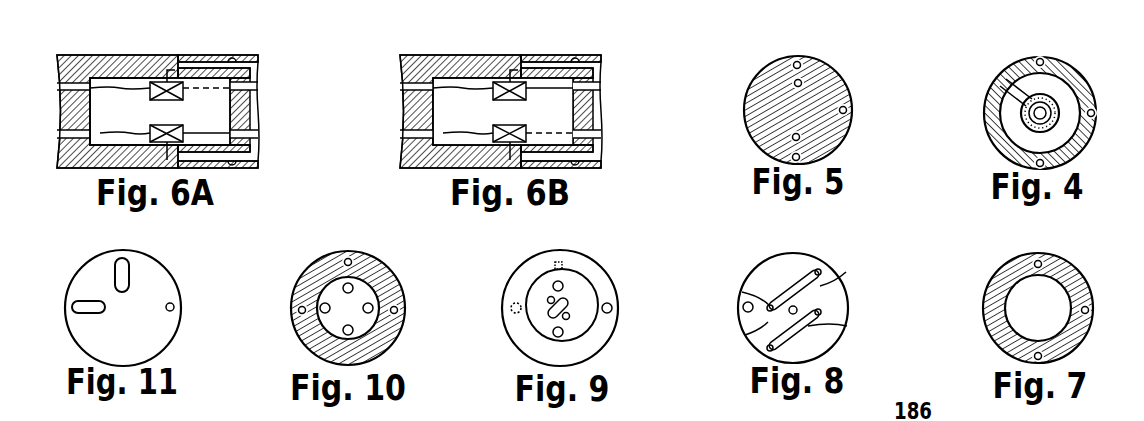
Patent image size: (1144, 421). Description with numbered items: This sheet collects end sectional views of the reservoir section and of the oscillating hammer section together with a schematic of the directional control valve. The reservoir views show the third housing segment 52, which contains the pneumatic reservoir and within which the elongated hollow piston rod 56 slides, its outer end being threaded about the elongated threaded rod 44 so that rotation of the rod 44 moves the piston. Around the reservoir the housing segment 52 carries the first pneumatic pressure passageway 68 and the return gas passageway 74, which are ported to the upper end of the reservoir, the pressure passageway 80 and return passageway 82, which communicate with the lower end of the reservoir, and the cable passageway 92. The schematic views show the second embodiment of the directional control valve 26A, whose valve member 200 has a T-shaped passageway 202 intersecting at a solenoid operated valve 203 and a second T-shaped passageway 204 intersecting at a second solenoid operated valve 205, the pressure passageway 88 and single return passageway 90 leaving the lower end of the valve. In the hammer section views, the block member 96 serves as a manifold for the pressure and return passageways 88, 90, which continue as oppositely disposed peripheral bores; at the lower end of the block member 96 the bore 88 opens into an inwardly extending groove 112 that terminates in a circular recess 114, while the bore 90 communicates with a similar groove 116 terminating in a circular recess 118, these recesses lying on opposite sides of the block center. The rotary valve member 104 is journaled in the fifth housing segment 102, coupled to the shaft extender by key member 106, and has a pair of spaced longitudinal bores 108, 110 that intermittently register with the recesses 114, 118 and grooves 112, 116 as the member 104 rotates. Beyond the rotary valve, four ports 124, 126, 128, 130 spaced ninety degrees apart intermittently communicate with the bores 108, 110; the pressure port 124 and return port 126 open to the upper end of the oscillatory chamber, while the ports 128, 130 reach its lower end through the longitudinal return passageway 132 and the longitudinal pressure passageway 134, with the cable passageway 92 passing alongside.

In FIG. 6A, the directional control valve (second embodiment) 26A is at (158, 62).
In FIG. 6B, the directional control valve (second embodiment) 26A is at (488, 62).
In FIG. 4, the threaded rod 44 is at (1003, 80).
In FIG. 4, the third housing segment 52 is at (1069, 66).
In FIG. 4, the piston rod 56 is at (1001, 92).
In FIG. 6A, the first pneumatic pressure passageway 68 is at (238, 55).
In FIG. 6B, the first pneumatic pressure passageway 68 is at (577, 55).
In FIG. 5, the first pneumatic pressure passageway 68 is at (803, 64).
In FIG. 4, the first pneumatic pressure passageway 68 is at (1039, 59).
In FIG. 6A, the return gas passageway 74 is at (252, 164).
In FIG. 6B, the return gas passageway 74 is at (600, 166).
In FIG. 5, the return gas passageway 74 is at (790, 157).
In FIG. 4, the return gas passageway 74 is at (1034, 163).
In FIG. 6A, the pressure passageway 80 is at (250, 86).
In FIG. 6B, the pressure passageway 80 is at (596, 90).
In FIG. 5, the pressure passageway 80 is at (792, 84).
In FIG. 6A, the return passageway 82 is at (252, 134).
In FIG. 6B, the return passageway 82 is at (598, 136).
In FIG. 5, the return passageway 82 is at (790, 137).
In FIG. 6A, the pressure passageway 88 is at (62, 85).
In FIG. 6B, the pressure passageway 88 is at (430, 88).
In FIG. 8, the pressure passageway 88 is at (822, 276).
In FIG. 7, the pressure passageway 88 is at (1032, 264).
In FIG. 6A, the return passageway 90 is at (64, 134).
In FIG. 6B, the return passageway 90 is at (400, 134).
In FIG. 8, the return passageway 90 is at (767, 351).
In FIG. 7, the return passageway 90 is at (1032, 356).
In FIG. 5, the cable passageway 92 is at (848, 110).
In FIG. 4, the cable passageway 92 is at (1096, 113).
In FIG. 11, the cable passageway 92 is at (175, 308).
In FIG. 10, the cable passageway 92 is at (399, 310).
In FIG. 9, the cable passageway 92 is at (611, 310).
In FIG. 8, the cable passageway 92 is at (742, 308).
In FIG. 7, the cable passageway 92 is at (1091, 309).
In FIG. 8, the block member 96 is at (790, 283).
In FIG. 9, the fifth housing segment 102 is at (518, 350).
In FIG. 8, the fifth housing segment 102 is at (808, 256).
In FIG. 9, the rotary valve member 104 is at (546, 287).
In FIG. 9, the key member 106 is at (548, 300).
In FIG. 9, the longitudinal bore 108 is at (566, 283).
In FIG. 9, the longitudinal bore 110 is at (570, 335).
In FIG. 8, the groove or recess 112 is at (745, 292).
In FIG. 8, the circular recess 114 is at (746, 335).
In FIG. 8, the groove or recess 116 is at (846, 326).
In FIG. 8, the circular recess 118 is at (832, 284).
In FIG. 10, the pressure port 124 is at (388, 330).
In FIG. 10, the return port 126 is at (322, 345).
In FIG. 10, the port 128 is at (322, 313).
In FIG. 10, the port 130 is at (356, 289).
In FIG. 11, the longitudinal passageway 132 is at (74, 307).
In FIG. 10, the longitudinal passageway 132 is at (303, 311).
In FIG. 11, the longitudinal passageway 134 is at (113, 268).
In FIG. 10, the longitudinal passageway 134 is at (341, 262).
In FIG. 6A, the valve member 200 is at (98, 80).
In FIG. 6B, the valve member 200 is at (455, 92).
In FIG. 6A, the T-shaped passageway 202 is at (125, 82).
In FIG. 6B, the T-shaped passageway 202 is at (420, 163).
In FIG. 6A, the solenoid operated valve 203 is at (183, 96).
In FIG. 6B, the solenoid operated valve 203 is at (527, 96).
In FIG. 6A, the second T-shaped passageway 204 is at (88, 160).
In FIG. 6B, the second T-shaped passageway 204 is at (464, 92).
In FIG. 6A, the second solenoid operated valve 205 is at (162, 124).
In FIG. 6B, the second solenoid operated valve 205 is at (506, 125).